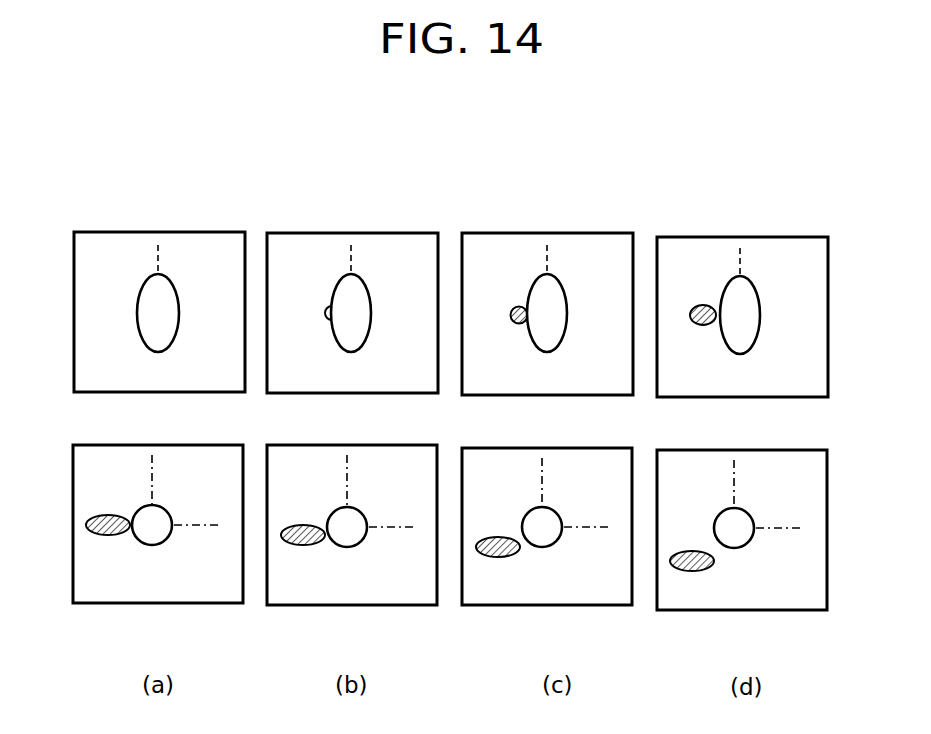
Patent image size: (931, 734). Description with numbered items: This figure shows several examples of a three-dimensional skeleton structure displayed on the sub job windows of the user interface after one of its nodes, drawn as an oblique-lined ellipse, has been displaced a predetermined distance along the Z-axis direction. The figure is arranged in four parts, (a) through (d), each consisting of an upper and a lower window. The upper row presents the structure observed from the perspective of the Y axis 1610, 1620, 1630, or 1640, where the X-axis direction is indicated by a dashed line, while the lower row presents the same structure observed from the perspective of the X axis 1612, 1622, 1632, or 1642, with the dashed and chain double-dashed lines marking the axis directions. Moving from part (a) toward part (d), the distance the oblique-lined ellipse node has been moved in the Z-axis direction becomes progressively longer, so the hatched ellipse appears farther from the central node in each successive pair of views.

The Y-axis perspective view 1610 is at (200, 232).
The Y-axis perspective view 1620 is at (393, 233).
The Y-axis perspective view 1630 is at (588, 233).
The Y-axis perspective view 1640 is at (785, 237).
The X-axis perspective view 1612 is at (112, 603).
The X-axis perspective view 1622 is at (305, 605).
The X-axis perspective view 1632 is at (500, 605).
The X-axis perspective view 1642 is at (695, 610).